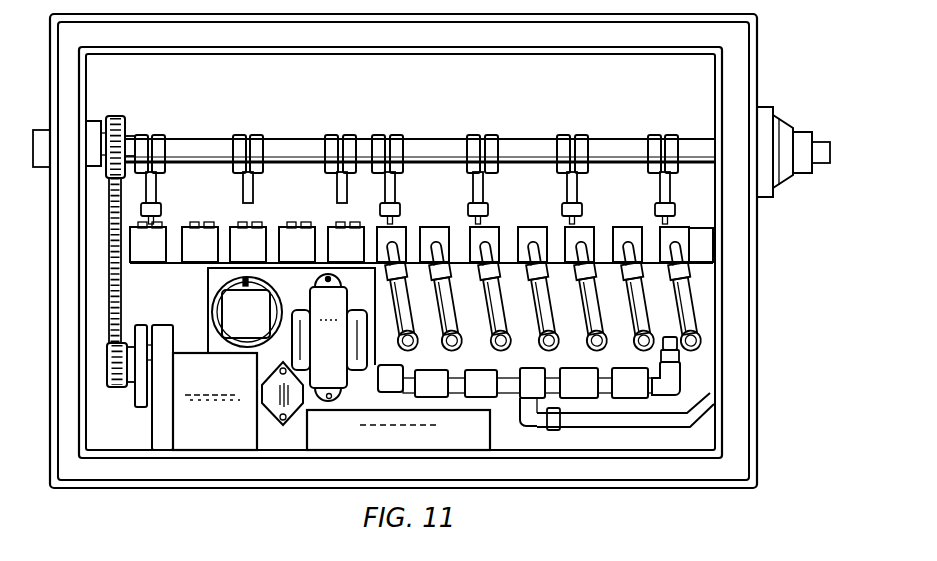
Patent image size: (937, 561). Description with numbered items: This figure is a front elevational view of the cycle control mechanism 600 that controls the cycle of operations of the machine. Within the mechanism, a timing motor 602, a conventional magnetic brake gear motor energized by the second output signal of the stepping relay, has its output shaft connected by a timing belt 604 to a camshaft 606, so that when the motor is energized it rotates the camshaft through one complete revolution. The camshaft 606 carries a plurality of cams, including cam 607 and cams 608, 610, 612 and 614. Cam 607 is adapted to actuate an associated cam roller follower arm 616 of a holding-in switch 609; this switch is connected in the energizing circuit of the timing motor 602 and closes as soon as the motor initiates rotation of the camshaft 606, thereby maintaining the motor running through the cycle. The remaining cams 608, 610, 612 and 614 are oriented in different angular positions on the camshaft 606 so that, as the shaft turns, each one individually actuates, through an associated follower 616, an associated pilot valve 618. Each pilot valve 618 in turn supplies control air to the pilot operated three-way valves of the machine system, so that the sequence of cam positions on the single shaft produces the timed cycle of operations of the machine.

The cycle control mechanism 600 is at (757, 55).
The timing motor 602 is at (230, 440).
The timing belt 604 is at (113, 275).
The camshaft 606 is at (193, 138).
The cam 607 is at (156, 185).
The cam 608 is at (400, 133).
The holding-in switch 609 is at (152, 264).
The cam 610 is at (488, 133).
The cam 612 is at (582, 133).
The cam 614 is at (657, 133).
The cam roller follower arm 616 is at (158, 214).
The pilot valve 618 is at (403, 232).